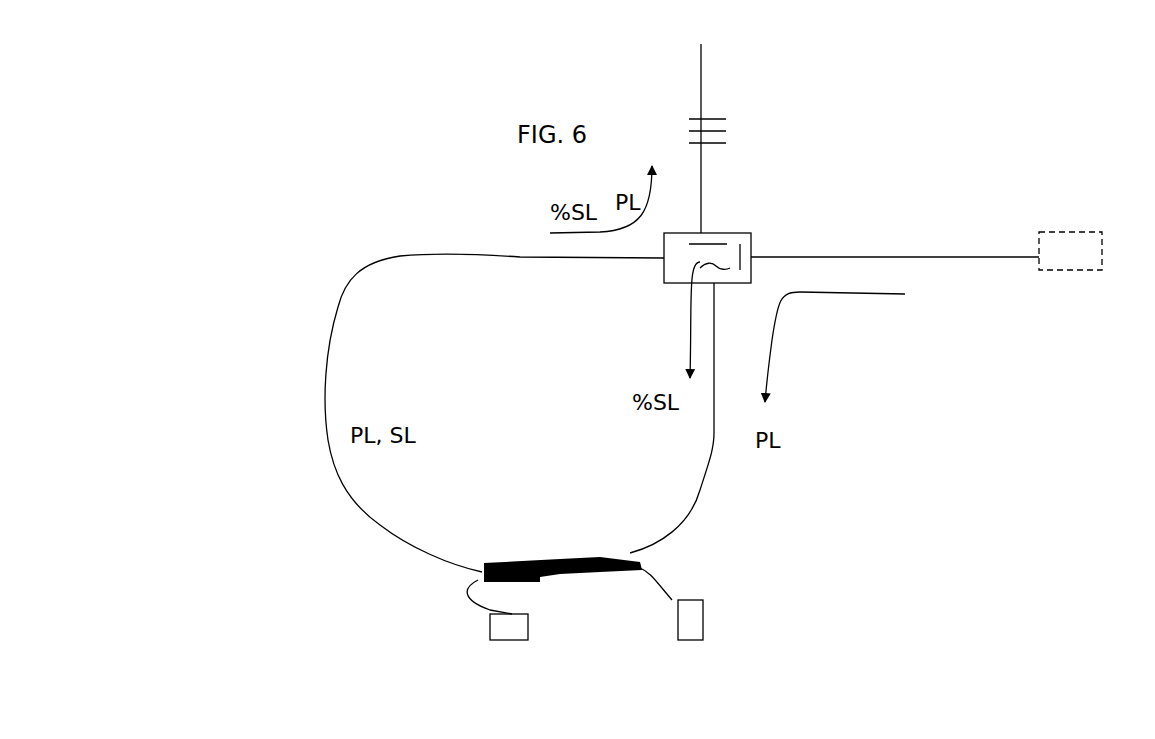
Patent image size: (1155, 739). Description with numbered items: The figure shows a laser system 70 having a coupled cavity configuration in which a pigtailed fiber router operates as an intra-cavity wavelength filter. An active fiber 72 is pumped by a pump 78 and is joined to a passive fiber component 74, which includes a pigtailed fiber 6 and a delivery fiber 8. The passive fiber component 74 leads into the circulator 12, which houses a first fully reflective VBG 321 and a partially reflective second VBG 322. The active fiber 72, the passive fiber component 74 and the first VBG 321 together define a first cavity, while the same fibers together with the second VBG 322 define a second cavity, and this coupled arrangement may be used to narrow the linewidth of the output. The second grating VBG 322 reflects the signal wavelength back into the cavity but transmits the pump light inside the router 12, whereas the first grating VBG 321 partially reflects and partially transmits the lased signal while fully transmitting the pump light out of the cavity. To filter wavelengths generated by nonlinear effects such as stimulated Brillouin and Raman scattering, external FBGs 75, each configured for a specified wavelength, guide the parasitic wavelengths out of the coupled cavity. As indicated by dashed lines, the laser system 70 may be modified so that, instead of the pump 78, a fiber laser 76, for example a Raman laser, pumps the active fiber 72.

The pigtailed fiber 6 is at (630, 258).
The delivery fiber 8 is at (701, 169).
The circulator 12 is at (672, 298).
The first fully reflective VBG 321 is at (714, 244).
The partially reflective second VBG 322 is at (740, 258).
The laser system 70 is at (318, 296).
The active fiber 72 is at (590, 572).
The passive fiber component 74 is at (350, 490).
The external FBGs 75 is at (691, 133).
The fiber laser 76 is at (1075, 270).
The pump 78 is at (515, 627).